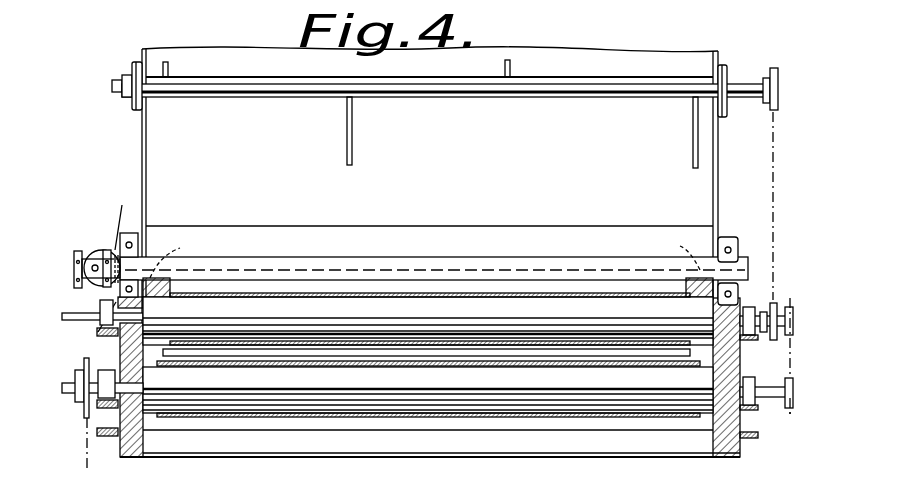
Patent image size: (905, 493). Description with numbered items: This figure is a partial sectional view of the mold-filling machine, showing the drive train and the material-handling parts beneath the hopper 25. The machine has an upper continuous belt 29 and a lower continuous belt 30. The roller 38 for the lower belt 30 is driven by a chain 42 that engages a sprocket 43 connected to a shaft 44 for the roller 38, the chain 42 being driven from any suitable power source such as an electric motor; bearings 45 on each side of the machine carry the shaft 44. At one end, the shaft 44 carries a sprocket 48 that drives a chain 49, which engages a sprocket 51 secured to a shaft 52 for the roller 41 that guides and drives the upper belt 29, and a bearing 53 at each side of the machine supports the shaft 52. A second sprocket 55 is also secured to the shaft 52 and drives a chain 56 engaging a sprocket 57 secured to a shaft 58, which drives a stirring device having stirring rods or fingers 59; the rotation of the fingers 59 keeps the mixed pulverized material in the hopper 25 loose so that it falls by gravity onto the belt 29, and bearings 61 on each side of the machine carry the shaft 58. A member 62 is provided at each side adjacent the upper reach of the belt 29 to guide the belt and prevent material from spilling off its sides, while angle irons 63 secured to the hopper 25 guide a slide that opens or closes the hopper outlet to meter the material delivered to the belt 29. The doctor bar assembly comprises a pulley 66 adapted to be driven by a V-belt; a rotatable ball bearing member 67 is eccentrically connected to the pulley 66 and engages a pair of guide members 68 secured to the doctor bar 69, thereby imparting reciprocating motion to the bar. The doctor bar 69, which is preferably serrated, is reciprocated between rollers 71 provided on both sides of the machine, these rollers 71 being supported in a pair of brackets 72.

The hopper 25 is at (152, 147).
The upper continuous belt 29 is at (542, 300).
The lower continuous belt 30 is at (512, 412).
The roller 38 is at (374, 390).
The roller 41 is at (400, 319).
The chain 42 is at (86, 465).
The sprocket 43 is at (84, 361).
The shaft 44 is at (70, 394).
The bearings 45 is at (106, 370).
The sprocket 48 is at (792, 416).
The chain 49 is at (792, 372).
The sprocket 51 is at (806, 303).
The shaft 52 is at (66, 316).
The bearing 53 is at (102, 305).
The second sprocket 55 is at (752, 386).
The chain 56 is at (775, 212).
The sprocket 57 is at (777, 104).
The shaft 58 is at (641, 98).
The stirring rods or fingers 59 is at (169, 69).
The bearings 61 is at (134, 70).
The member 62 is at (158, 299).
The angle irons 63 is at (425, 254).
The pulley 66 is at (96, 251).
The rotatable ball bearing member 67 is at (86, 278).
The guide members 68 is at (107, 250).
The doctor bar 69 is at (256, 264).
The rollers 71 is at (85, 339).
The brackets 72 is at (136, 236).